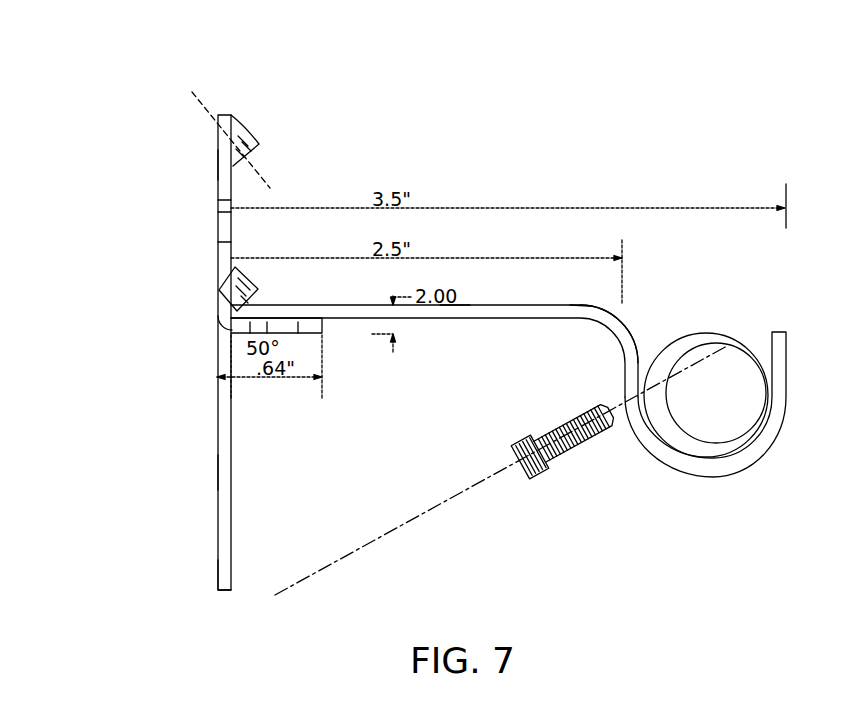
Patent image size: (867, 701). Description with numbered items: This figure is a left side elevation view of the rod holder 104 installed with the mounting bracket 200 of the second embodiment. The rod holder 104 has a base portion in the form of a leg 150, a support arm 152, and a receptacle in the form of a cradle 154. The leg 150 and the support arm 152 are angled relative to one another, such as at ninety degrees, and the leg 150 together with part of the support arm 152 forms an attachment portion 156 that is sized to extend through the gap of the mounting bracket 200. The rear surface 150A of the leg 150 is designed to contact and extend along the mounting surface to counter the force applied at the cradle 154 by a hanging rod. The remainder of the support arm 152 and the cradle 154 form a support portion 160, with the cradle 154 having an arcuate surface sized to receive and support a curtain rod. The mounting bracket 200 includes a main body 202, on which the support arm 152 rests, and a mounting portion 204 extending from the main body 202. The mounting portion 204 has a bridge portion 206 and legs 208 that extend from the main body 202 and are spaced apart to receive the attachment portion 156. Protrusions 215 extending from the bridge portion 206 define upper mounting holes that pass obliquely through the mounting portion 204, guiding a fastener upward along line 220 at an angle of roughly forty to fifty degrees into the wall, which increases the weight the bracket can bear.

The mounting bracket 200 is at (122, 184).
The line 220 is at (194, 92).
The mounting portion 204 is at (229, 114).
The protrusions 215 is at (248, 133).
The bridge portion 206 is at (218, 165).
The legs 208 is at (218, 268).
The leg 150 is at (231, 540).
The rear surface 150A is at (218, 470).
The support arm 152 is at (496, 318).
The cradle 154 is at (741, 466).
The rod holder 104 is at (594, 306).
The attachment portion 156 is at (458, 272).
The support portion 160 is at (584, 292).
The main body 202 is at (312, 334).